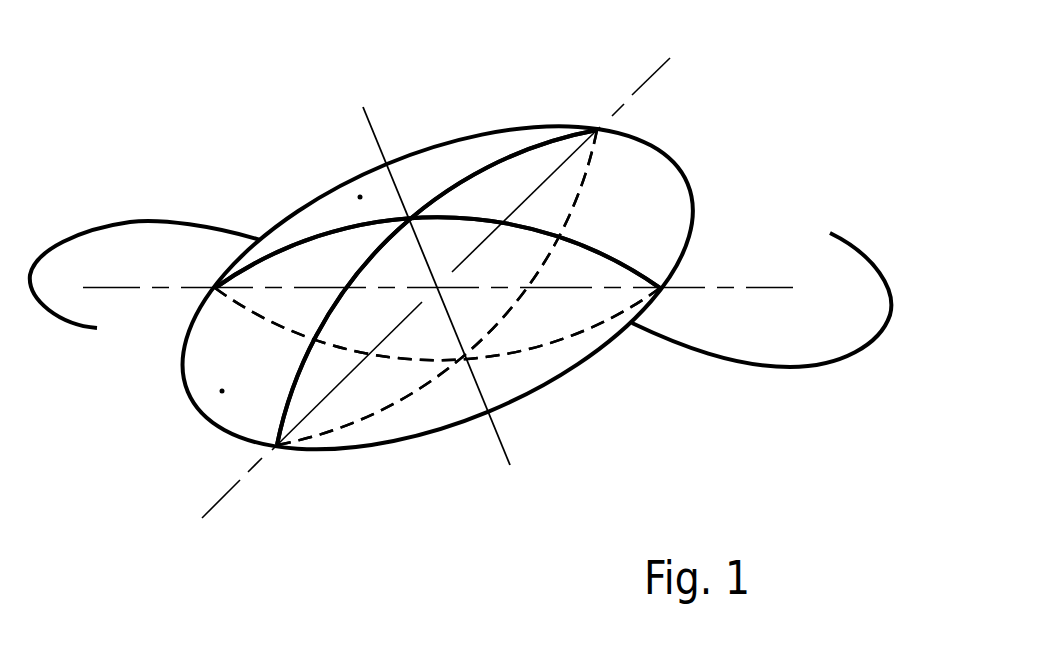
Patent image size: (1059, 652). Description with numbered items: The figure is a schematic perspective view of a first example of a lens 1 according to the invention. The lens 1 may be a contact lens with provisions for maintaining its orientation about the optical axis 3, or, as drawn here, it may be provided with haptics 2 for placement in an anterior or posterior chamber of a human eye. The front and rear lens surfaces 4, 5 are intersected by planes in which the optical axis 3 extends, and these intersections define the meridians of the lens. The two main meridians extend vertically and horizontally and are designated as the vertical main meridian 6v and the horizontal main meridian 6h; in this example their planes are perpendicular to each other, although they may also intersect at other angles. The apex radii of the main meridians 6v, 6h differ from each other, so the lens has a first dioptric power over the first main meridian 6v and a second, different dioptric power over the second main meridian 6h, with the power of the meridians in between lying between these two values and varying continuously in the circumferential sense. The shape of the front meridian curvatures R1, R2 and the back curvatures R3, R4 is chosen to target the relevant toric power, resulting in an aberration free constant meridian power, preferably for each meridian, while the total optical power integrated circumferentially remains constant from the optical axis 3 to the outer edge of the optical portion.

The lens 1 is at (708, 102).
The haptics 2 is at (137, 221).
The optical axis 3 is at (371, 123).
The front lens surface 4 is at (360, 197).
The rear lens surface 5 is at (222, 391).
The vertical main meridian 6v is at (525, 152).
The horizontal main meridian 6h is at (610, 255).
The front meridian curvature R1 is at (334, 219).
The front meridian curvature R2 is at (477, 157).
The back curvature R3 is at (559, 352).
The back curvature R4 is at (370, 426).